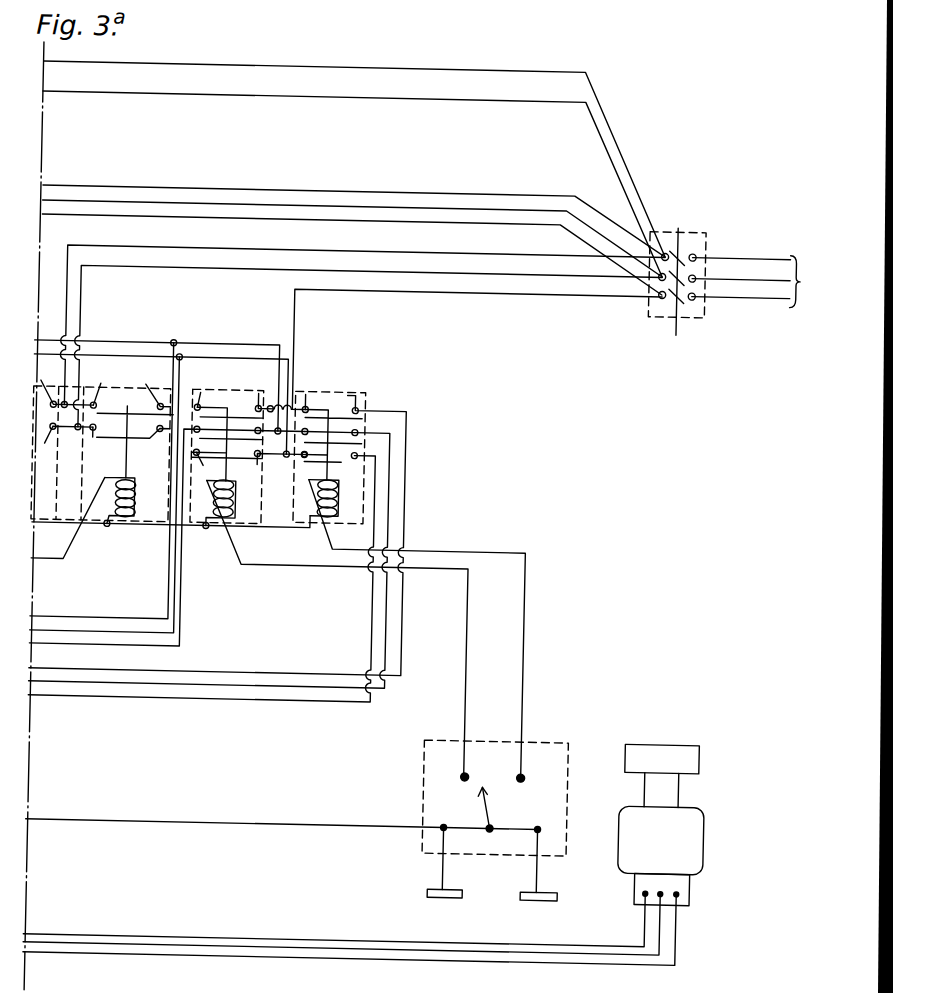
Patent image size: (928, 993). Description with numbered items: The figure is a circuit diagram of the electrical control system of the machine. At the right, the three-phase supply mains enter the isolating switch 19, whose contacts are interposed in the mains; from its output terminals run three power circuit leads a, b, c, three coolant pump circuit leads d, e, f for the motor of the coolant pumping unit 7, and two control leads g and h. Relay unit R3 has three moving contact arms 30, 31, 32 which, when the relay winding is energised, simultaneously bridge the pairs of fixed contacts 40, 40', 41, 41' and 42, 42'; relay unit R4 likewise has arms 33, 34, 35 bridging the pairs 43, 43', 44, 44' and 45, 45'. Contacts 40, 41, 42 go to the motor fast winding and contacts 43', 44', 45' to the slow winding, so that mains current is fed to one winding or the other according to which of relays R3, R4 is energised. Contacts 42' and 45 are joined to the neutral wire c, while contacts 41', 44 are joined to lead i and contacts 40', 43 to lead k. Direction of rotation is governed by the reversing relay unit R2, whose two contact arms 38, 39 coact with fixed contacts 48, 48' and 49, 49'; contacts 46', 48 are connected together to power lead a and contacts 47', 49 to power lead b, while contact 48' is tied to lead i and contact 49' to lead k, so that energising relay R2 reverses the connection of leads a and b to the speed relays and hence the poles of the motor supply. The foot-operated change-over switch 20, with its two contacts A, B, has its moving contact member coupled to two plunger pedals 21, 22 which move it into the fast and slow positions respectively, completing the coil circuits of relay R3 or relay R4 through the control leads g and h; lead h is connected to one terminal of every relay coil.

The coolant pumping unit 7 is at (364, 849).
The isolating switch 19 is at (705, 232).
The change-over switch 20 is at (495, 798).
The plunger pedal 21 is at (445, 885).
The plunger pedal 22 is at (575, 890).
The moving contact arm 30 is at (230, 434).
The moving contact arm 31 is at (251, 428).
The moving contact arm 32 is at (227, 451).
The moving contact arm 33 is at (333, 437).
The moving contact arm 34 is at (209, 551).
The moving contact arm 35 is at (313, 455).
The contact arm 38 is at (135, 434).
The contact arm 39 is at (133, 426).
The fixed contact 40 is at (200, 386).
The fixed contact 40' is at (275, 387).
The fixed contact 41 is at (215, 401).
The fixed contact 41' is at (246, 430).
The fixed contact 42 is at (205, 464).
The fixed contact 42' is at (261, 465).
The fixed contact 43 is at (305, 387).
The fixed contact 43' is at (218, 516).
The fixed contact 44 is at (332, 431).
The fixed contact 44' is at (382, 407).
The fixed contact 45 is at (286, 466).
The fixed contact 45' is at (201, 574).
The fixed contact 46' is at (65, 383).
The fixed contact 47' is at (64, 442).
The fixed contact 48 is at (99, 385).
The fixed contact 48' is at (155, 385).
The fixed contact 49 is at (99, 441).
The fixed contact 49' is at (149, 442).
The relay unit R2 is at (102, 472).
The relay unit R3 is at (246, 475).
The relay unit R4 is at (241, 530).
The switch contact A is at (445, 876).
The switch contact B is at (539, 878).
The power circuit lead a is at (292, 244).
The power circuit lead b is at (293, 264).
The neutral wire c is at (323, 287).
The coolant pump circuit lead d is at (310, 185).
The coolant pump circuit lead e is at (291, 204).
The coolant pump circuit lead f is at (379, 215).
The control lead g is at (281, 61).
The control lead h is at (343, 91).
The lead i is at (247, 338).
The lead k is at (190, 350).